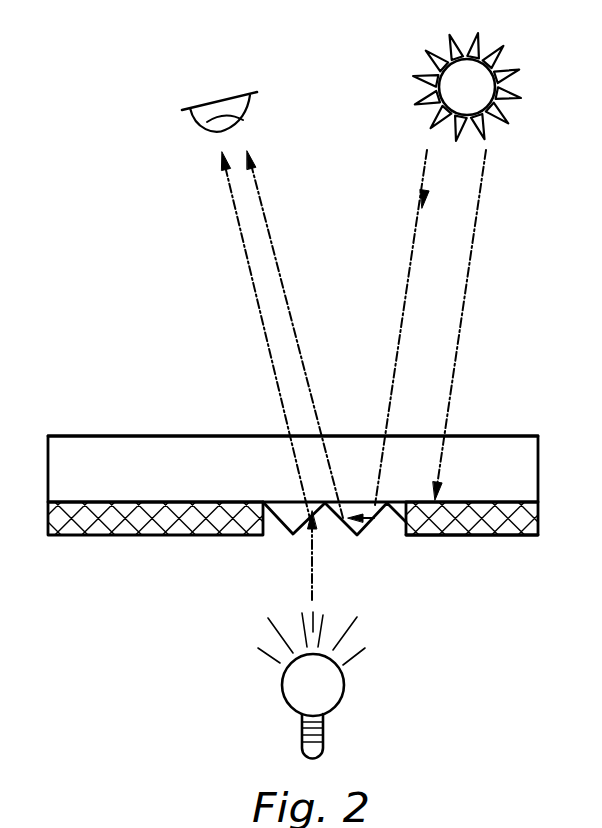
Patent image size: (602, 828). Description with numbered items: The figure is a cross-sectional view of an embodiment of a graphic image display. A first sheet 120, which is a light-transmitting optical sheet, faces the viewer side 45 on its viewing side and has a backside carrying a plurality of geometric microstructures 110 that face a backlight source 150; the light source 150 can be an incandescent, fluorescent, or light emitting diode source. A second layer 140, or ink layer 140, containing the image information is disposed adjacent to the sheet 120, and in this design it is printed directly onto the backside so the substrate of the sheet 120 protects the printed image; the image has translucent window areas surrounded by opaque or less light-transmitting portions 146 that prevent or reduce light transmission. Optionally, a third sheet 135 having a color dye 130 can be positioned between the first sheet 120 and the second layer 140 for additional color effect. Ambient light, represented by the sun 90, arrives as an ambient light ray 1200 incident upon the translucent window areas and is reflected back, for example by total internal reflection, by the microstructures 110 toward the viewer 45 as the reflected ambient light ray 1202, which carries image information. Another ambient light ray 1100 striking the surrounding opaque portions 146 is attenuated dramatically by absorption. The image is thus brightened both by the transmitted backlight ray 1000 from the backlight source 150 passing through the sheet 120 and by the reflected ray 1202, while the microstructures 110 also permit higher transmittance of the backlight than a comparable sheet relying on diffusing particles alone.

The viewer side 45 is at (200, 124).
The sun / ambient light source 90 is at (510, 107).
The geometric microstructures 110 is at (277, 528).
The first sheet 120 is at (502, 448).
The color dye 130 is at (223, 435).
The third sheet 135 is at (101, 502).
The second layer 140 is at (443, 528).
The opaque or less light-transmitting portions 146 is at (500, 537).
The backlight source 150 is at (325, 695).
The transmitted backlight ray 1000 is at (257, 298).
The ambient light ray 1100 is at (463, 297).
The ambient light ray 1200 is at (407, 277).
The reflected ambient light ray 1202 is at (263, 215).